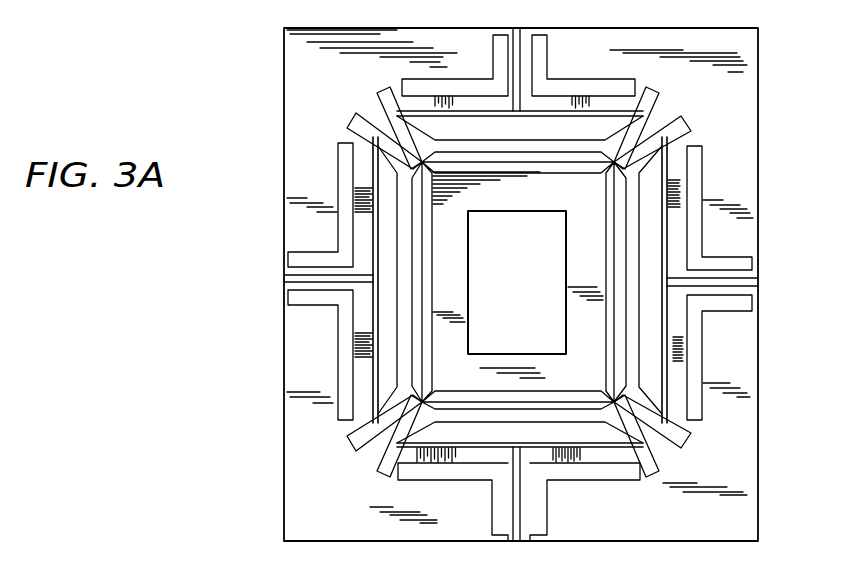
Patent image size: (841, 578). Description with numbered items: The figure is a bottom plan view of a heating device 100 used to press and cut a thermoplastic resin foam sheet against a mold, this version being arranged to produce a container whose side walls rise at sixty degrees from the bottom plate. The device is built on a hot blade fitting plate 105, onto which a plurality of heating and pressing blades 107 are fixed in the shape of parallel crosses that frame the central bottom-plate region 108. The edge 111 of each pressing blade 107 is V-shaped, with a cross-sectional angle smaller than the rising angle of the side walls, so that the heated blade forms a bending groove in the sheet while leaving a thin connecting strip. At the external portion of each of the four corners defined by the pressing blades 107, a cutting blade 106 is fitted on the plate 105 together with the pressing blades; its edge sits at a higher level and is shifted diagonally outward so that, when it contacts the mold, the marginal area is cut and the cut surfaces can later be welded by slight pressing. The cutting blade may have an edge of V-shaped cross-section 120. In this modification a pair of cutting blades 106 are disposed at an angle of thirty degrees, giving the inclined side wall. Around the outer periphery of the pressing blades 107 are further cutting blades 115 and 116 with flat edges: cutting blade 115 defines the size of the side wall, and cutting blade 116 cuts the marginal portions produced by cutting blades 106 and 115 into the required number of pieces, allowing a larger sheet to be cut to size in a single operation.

The heating device 100 is at (744, 82).
The hot blade fitting plate 105 is at (752, 134).
The cutting blade 106 is at (650, 432).
The heating and pressing blade 107 is at (615, 338).
The central chip platform 108 is at (531, 300).
The edge of the pressing blade 111 is at (548, 403).
The cutting blade 115 is at (415, 468).
The cutting blade 116 is at (744, 287).
The V-shaped cross-section 120 is at (619, 405).